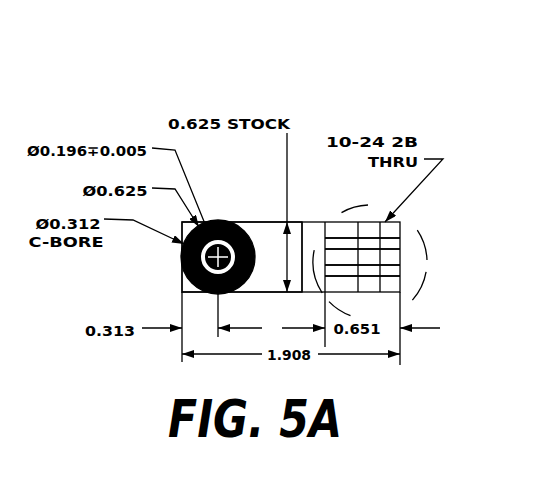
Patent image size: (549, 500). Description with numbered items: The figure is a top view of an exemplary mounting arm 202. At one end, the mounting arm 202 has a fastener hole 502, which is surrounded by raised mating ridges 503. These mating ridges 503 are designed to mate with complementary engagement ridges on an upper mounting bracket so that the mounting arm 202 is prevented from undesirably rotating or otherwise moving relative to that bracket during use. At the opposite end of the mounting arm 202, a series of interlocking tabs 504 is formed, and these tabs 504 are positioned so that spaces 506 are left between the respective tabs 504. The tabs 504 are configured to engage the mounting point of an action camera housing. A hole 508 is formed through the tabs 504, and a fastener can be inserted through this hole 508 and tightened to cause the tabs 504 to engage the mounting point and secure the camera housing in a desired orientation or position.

The mounting arm 202 is at (333, 168).
The fastener hole 502 is at (222, 226).
The raised mating ridges 503 is at (183, 280).
The interlocking tabs 504 is at (402, 221).
The spaces 506 is at (400, 255).
The hole 508 is at (371, 282).